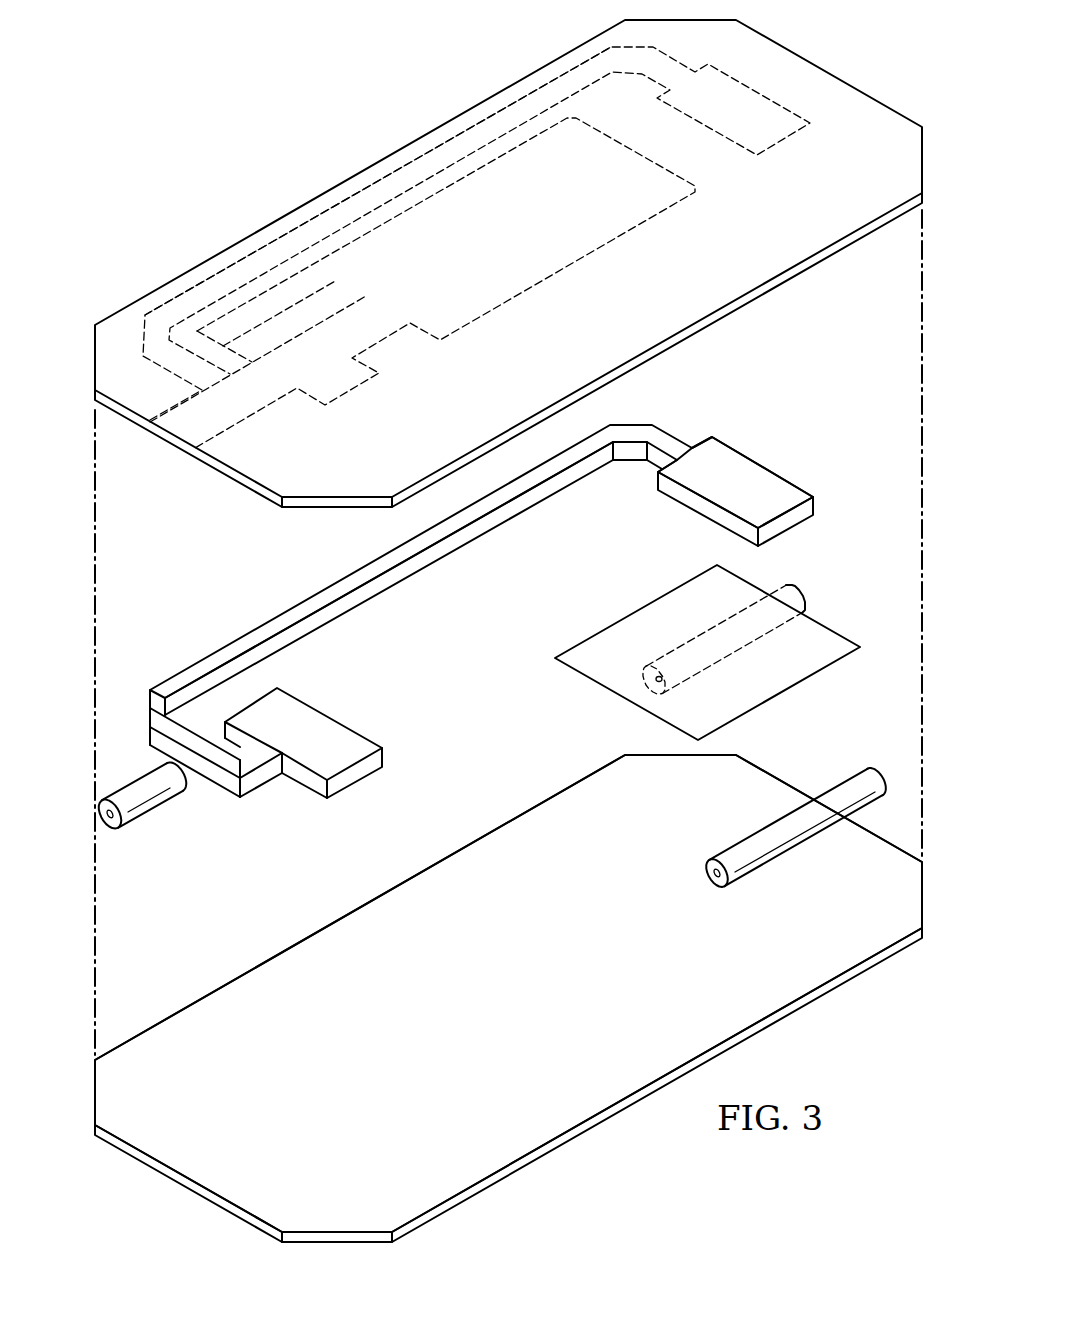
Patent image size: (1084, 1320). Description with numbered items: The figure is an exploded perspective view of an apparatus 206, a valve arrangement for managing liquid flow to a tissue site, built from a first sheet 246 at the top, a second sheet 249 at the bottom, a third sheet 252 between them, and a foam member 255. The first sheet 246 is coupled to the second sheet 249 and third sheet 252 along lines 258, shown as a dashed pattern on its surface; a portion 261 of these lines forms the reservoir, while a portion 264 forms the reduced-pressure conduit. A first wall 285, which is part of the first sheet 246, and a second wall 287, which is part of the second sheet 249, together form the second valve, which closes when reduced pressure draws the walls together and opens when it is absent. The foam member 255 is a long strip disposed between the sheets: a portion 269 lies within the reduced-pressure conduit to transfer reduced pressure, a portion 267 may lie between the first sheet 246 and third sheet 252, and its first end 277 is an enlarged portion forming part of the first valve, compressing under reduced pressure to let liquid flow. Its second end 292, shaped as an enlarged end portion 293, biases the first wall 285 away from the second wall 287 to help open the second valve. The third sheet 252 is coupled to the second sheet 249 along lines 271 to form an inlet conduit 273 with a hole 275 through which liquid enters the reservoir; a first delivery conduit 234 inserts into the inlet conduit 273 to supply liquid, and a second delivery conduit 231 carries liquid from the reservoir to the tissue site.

The apparatus 206 is at (840, 52).
The portion of the lines 264 is at (488, 118).
The portion of the lines 261 is at (705, 175).
The lines 258 is at (240, 265).
The first sheet 246 is at (118, 325).
The first wall 285 is at (330, 318).
The first end 277 is at (730, 460).
The portion of the foam member 267 is at (790, 480).
The portion of the foam member 269 is at (350, 580).
The foam member 255 is at (222, 656).
The second end 292 is at (300, 703).
The enlarged end portion 293 is at (353, 740).
The lines 271 is at (678, 645).
The third sheet 252 is at (590, 647).
The inlet conduit 273 is at (740, 622).
The hole 275 is at (663, 678).
The first delivery conduit 234 is at (845, 788).
The second delivery conduit 231 is at (150, 808).
The second wall 287 is at (471, 1001).
The second sheet 249 is at (488, 1160).